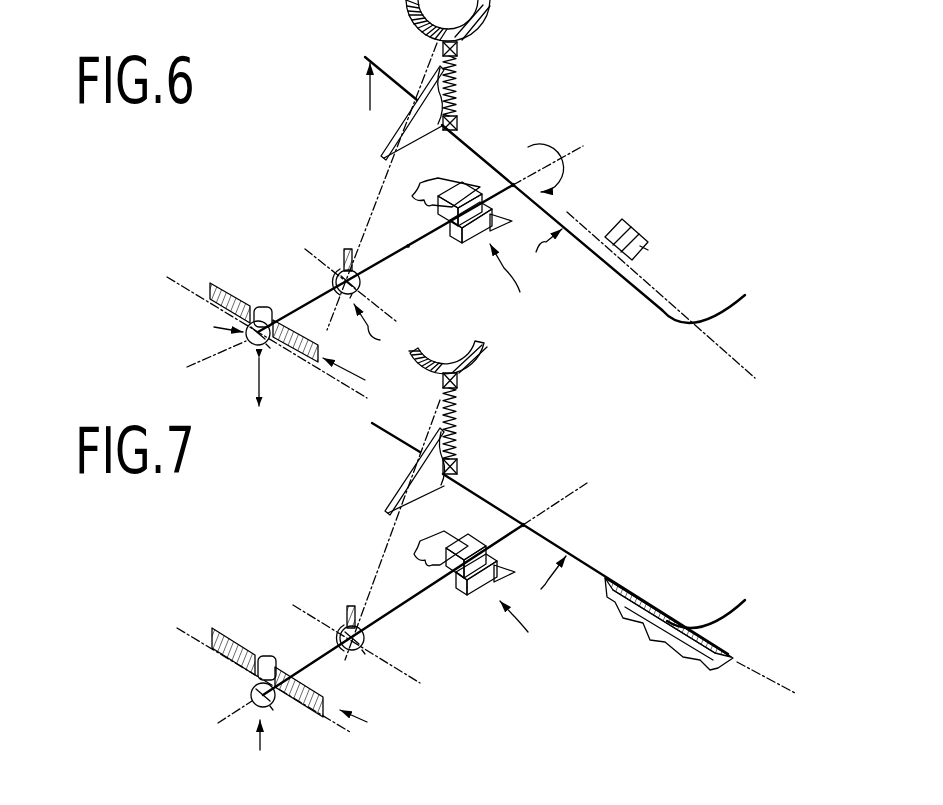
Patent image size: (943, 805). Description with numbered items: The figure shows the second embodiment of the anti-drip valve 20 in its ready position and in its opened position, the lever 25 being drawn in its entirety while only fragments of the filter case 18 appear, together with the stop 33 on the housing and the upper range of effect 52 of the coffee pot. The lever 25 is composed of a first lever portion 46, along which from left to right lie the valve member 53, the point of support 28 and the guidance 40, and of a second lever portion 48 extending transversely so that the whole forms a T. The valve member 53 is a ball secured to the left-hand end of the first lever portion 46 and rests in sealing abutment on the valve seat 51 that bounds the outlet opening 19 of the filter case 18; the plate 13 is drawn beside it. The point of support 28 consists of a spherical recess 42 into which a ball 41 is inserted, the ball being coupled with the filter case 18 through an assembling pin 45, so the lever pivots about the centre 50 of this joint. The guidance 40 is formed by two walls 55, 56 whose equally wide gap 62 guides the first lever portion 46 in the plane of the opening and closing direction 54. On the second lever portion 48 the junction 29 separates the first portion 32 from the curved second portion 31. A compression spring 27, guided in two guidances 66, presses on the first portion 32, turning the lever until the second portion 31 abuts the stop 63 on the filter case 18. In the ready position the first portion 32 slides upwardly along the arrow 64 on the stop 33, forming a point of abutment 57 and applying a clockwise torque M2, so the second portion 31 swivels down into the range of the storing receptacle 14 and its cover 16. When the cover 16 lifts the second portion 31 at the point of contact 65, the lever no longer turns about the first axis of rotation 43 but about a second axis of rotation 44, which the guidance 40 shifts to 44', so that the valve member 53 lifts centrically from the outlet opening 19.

In FIG. 6, the plate 13 is at (244, 302).
In FIG. 7, the plate 13 is at (242, 650).
In FIG. 7, the storing receptacle 14 is at (708, 638).
In FIG. 7, the cover 16 is at (703, 633).
In FIG. 6, the filter case 18 is at (306, 0).
In FIG. 7, the filter case 18 is at (472, 362).
In FIG. 6, the outlet opening 19 is at (259, 307).
In FIG. 7, the outlet opening 19 is at (266, 656).
In FIG. 6, the anti-drip valve 20 is at (233, 172).
In FIG. 7, the anti-drip valve 20 is at (263, 729).
In FIG. 6, the lever 25 is at (558, 142).
In FIG. 7, the lever 25 is at (569, 476).
In FIG. 6, the spring element 27 is at (456, 79).
In FIG. 7, the spring element 27 is at (460, 420).
In FIG. 6, the point of support 28 is at (376, 330).
In FIG. 6, the junction 29 is at (513, 183).
In FIG. 7, the junction 29 is at (523, 522).
In FIG. 6, the second portion 31 is at (708, 327).
In FIG. 7, the second portion 31 is at (748, 602).
In FIG. 6, the first portion 32 is at (478, 155).
In FIG. 7, the first portion 32 is at (470, 491).
In FIG. 6, the stop 33 is at (396, 126).
In FIG. 7, the stop 33 is at (418, 470).
In FIG. 6, the guidance 40 is at (511, 278).
In FIG. 7, the guidance 40 is at (521, 626).
In FIG. 6, the ball 41 is at (351, 297).
In FIG. 7, the ball 41 is at (364, 650).
In FIG. 6, the spherical recess 42 is at (362, 286).
In FIG. 7, the spherical recess 42 is at (364, 638).
In FIG. 6, the first axis of rotation 43 is at (582, 147).
In FIG. 7, the first axis of rotation 43 is at (222, 724).
In FIG. 6, the second axis of rotation 44 is at (382, 186).
In FIG. 7, the second axis of rotation 44 is at (392, 530).
In FIG. 6, the shifted second axis of rotation 44' is at (340, 266).
In FIG. 7, the shifted second axis of rotation 44' is at (361, 658).
In FIG. 6, the assembling pin 45 is at (346, 251).
In FIG. 7, the assembling pin 45 is at (345, 608).
In FIG. 6, the first lever portion 46 is at (408, 247).
In FIG. 6, the second lever portion 48 is at (539, 249).
In FIG. 7, the second lever portion 48 is at (547, 582).
In FIG. 6, the centre 50 is at (336, 280).
In FIG. 7, the centre 50 is at (351, 652).
In FIG. 6, the valve seat 51 is at (240, 325).
In FIG. 6, the upper range of effect 52 is at (757, 378).
In FIG. 7, the upper range of effect 52 is at (773, 680).
In FIG. 6, the valve member 53 is at (268, 345).
In FIG. 7, the valve member 53 is at (270, 706).
In FIG. 6, the opening and/or closing direction 54 is at (258, 384).
In FIG. 6, the wall 55 is at (460, 190).
In FIG. 7, the wall 55 is at (485, 548).
In FIG. 6, the wall 56 is at (465, 228).
In FIG. 7, the wall 56 is at (495, 570).
In FIG. 6, the point of abutment 57 is at (417, 99).
In FIG. 7, the point of abutment 57 is at (418, 450).
In FIG. 6, the gap 62 is at (437, 211).
In FIG. 7, the gap 62 is at (437, 568).
In FIG. 6, the stop 63 is at (645, 252).
In FIG. 6, the arrow 64 is at (366, 81).
In FIG. 7, the point of contact 65 is at (668, 618).
In FIG. 6, the guidance 66 is at (459, 50).
In FIG. 7, the guidance 66 is at (458, 382).
In FIG. 6, the torque M2 is at (562, 168).